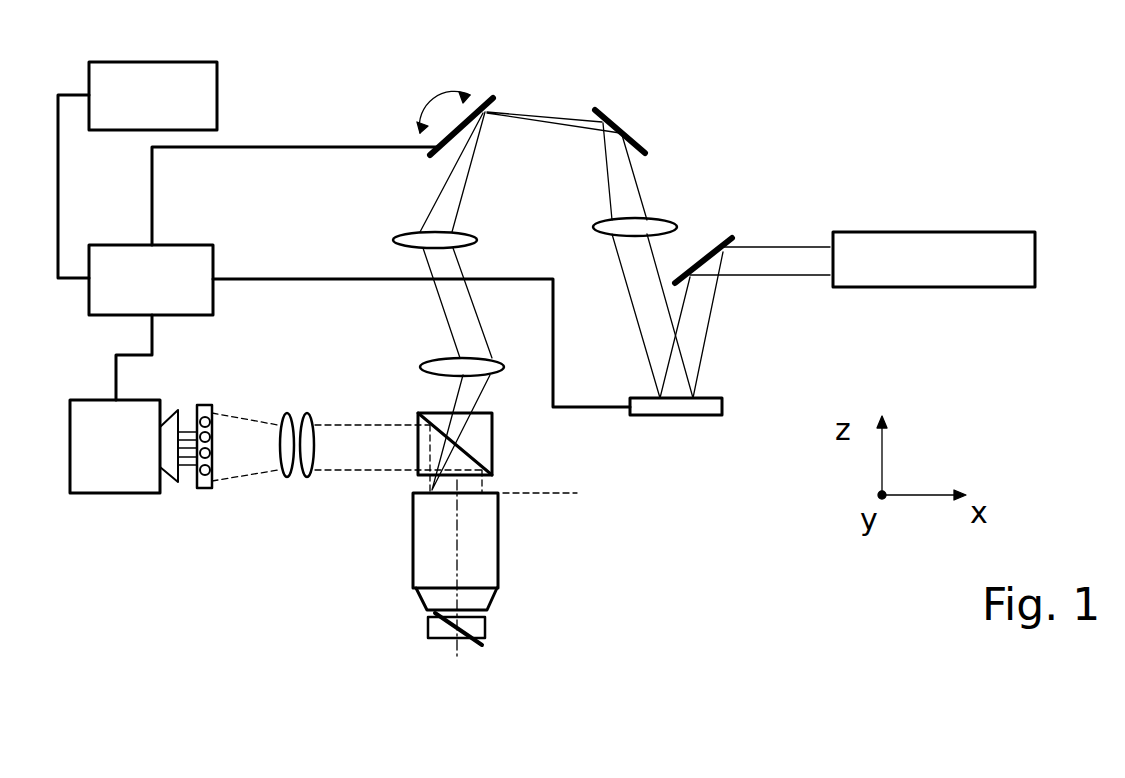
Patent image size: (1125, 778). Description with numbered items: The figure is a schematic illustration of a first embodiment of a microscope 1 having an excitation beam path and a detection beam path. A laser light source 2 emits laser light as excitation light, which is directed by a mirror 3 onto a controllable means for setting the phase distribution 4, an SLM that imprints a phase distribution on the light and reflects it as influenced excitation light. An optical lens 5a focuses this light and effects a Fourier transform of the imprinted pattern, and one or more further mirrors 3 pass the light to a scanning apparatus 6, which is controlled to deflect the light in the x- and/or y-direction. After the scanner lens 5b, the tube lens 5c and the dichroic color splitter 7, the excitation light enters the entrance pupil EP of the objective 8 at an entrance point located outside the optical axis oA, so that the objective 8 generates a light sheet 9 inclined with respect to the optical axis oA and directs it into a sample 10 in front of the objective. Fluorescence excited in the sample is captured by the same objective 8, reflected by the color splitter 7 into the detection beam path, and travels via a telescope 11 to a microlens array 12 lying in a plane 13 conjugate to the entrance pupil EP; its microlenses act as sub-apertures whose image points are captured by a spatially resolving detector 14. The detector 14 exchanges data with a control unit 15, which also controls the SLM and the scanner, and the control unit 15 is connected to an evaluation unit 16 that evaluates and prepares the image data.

The microscope 1 is at (363, 75).
The laser light source 2 is at (921, 275).
The mirror 3 is at (637, 140).
The means for setting the phase distribution (SLM) 4 is at (655, 417).
The optical lens 5a is at (600, 222).
The scanner lens 5b is at (395, 232).
The tube lens 5c is at (450, 357).
The scanning apparatus (scanner) 6 is at (487, 103).
The color splitter 7 is at (492, 440).
The objective 8 is at (498, 535).
The light sheet 9 is at (482, 647).
The sample 10 is at (430, 628).
The telescope 11 is at (307, 478).
The microlens array 12 is at (205, 490).
The plane conjugate to the entrance pupil 13 is at (207, 400).
The detector 14 is at (94, 468).
The control unit 15 is at (129, 298).
The evaluation unit 16 is at (130, 112).
The entrance pupil EP is at (543, 495).
The optical axis oA is at (457, 558).